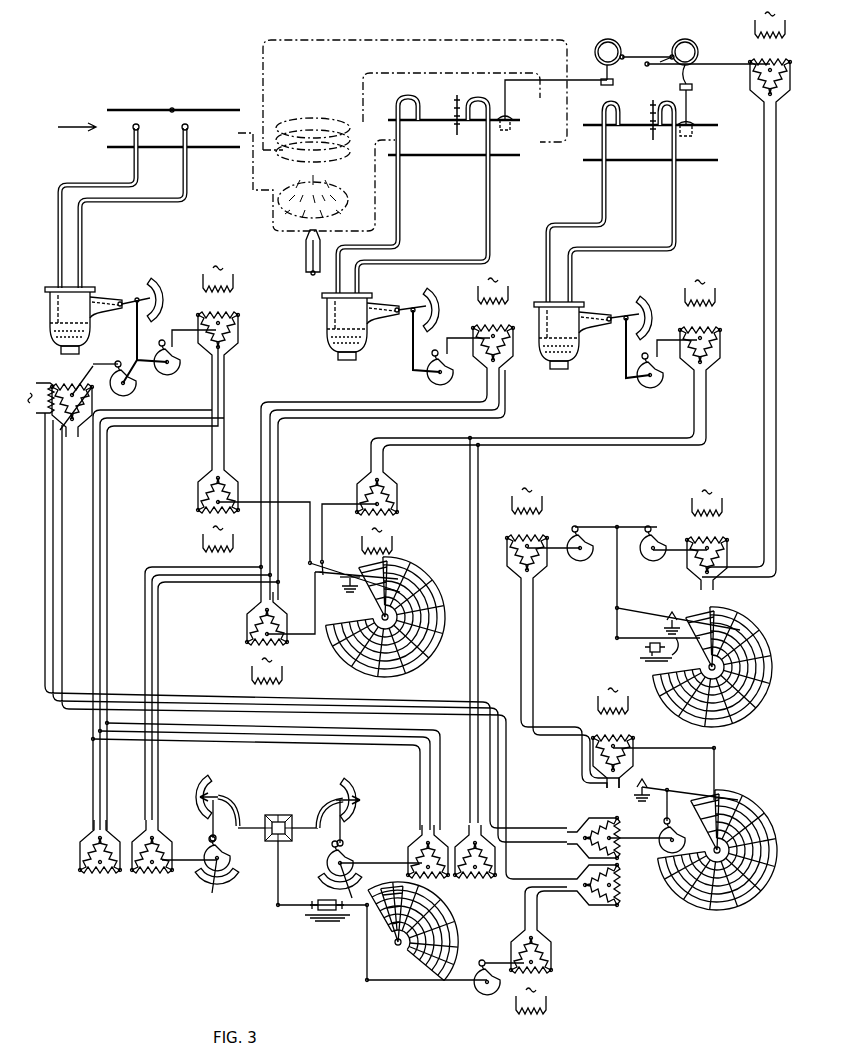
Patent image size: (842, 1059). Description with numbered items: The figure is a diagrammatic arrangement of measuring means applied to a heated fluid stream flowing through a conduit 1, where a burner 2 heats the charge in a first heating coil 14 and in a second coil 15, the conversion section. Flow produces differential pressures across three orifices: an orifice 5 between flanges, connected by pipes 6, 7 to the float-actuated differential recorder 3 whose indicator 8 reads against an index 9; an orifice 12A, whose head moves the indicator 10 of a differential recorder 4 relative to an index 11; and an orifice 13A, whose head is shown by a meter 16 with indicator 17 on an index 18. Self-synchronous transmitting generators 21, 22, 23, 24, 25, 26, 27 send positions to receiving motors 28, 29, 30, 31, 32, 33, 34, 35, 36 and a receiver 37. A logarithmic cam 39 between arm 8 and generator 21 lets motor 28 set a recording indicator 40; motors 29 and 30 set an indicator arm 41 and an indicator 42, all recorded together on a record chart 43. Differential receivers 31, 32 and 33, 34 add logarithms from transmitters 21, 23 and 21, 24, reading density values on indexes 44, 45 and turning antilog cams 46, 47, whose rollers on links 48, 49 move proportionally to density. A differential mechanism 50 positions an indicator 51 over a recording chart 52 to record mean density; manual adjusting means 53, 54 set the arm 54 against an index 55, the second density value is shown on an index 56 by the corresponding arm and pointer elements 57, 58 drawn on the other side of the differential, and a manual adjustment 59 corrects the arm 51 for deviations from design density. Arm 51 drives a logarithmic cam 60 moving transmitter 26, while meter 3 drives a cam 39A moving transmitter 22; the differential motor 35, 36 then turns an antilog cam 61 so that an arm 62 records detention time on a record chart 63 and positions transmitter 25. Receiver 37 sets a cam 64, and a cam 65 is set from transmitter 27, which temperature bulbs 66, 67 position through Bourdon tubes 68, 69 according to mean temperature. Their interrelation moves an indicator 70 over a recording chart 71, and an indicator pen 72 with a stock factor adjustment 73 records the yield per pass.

The conduit 1 is at (112, 150).
The burner 2 is at (305, 255).
The differential recorder 3 is at (50, 310).
The differential recorder 4 is at (326, 315).
The orifice 5 is at (172, 108).
The pipe 6 is at (57, 238).
The pipe 7 is at (83, 238).
The indicator 8 is at (142, 284).
The index 9 is at (145, 340).
The indicator 10 is at (418, 296).
The index 11 is at (450, 346).
The orifice 12A is at (455, 108).
The orifice 13A is at (653, 104).
The heating coil 14 is at (340, 198).
The coil 15 is at (340, 145).
The meter 16 is at (538, 348).
The indicator 17 is at (632, 304).
The index 18 is at (647, 352).
The self-synchronous generator 21 is at (228, 315).
The transmitter 22 is at (57, 401).
The self-synchronous generator 23 is at (504, 328).
The self-synchronous generator 24 is at (711, 330).
The transmitter 25 is at (654, 744).
The transmitter 26 is at (543, 950).
The transmitter 27 is at (747, 294).
The receiving motor 28 is at (201, 588).
The receiving motor 29 is at (325, 595).
The receiving motor 30 is at (514, 601).
The receiving motor 31 is at (100, 858).
The receiving motor 32 is at (174, 858).
The receiving motor 33 is at (271, 812).
The receiving motor 34 is at (475, 863).
The receiving motor 35 is at (611, 885).
The receiving motor 36 is at (358, 646).
The receiver 37 is at (553, 638).
The cam 39 is at (178, 370).
The cam 39A is at (130, 389).
The recording indicator 40 is at (308, 567).
The indicator arm 41 is at (330, 578).
The indicator 42 is at (326, 566).
The record chart 43 is at (432, 642).
The index 44 is at (220, 896).
The index 45 is at (310, 890).
The cam 46 is at (229, 853).
The antilog cam 47 is at (326, 860).
The link 48 is at (210, 822).
The link 49 is at (346, 830).
The differential mechanism 50 is at (262, 812).
The indicator 51 is at (364, 896).
The index and recording chart 52 is at (452, 912).
The manual adjusting means 53 is at (216, 790).
The arm 54 is at (236, 800).
The index 55 is at (192, 780).
The index 56 is at (348, 786).
The connecting tube 57 is at (318, 796).
The pointer 58 is at (364, 788).
The manual adjustment 59 is at (306, 922).
The logarithmic cam 60 is at (488, 994).
The cam 61 is at (678, 822).
The arm 62 is at (676, 790).
The record chart 63 is at (730, 900).
The cam 64 is at (586, 556).
The cam 65 is at (656, 556).
The temperature responsive bulb 66 is at (695, 138).
The bulb 67 is at (512, 130).
The Bourdon tube 68 is at (690, 40).
The Bourdon tube 69 is at (610, 40).
The indicator 70 is at (642, 612).
The index and recording chart 71 is at (742, 612).
The indicator pen 72 is at (618, 642).
The stock factor adjustment 73 is at (660, 662).